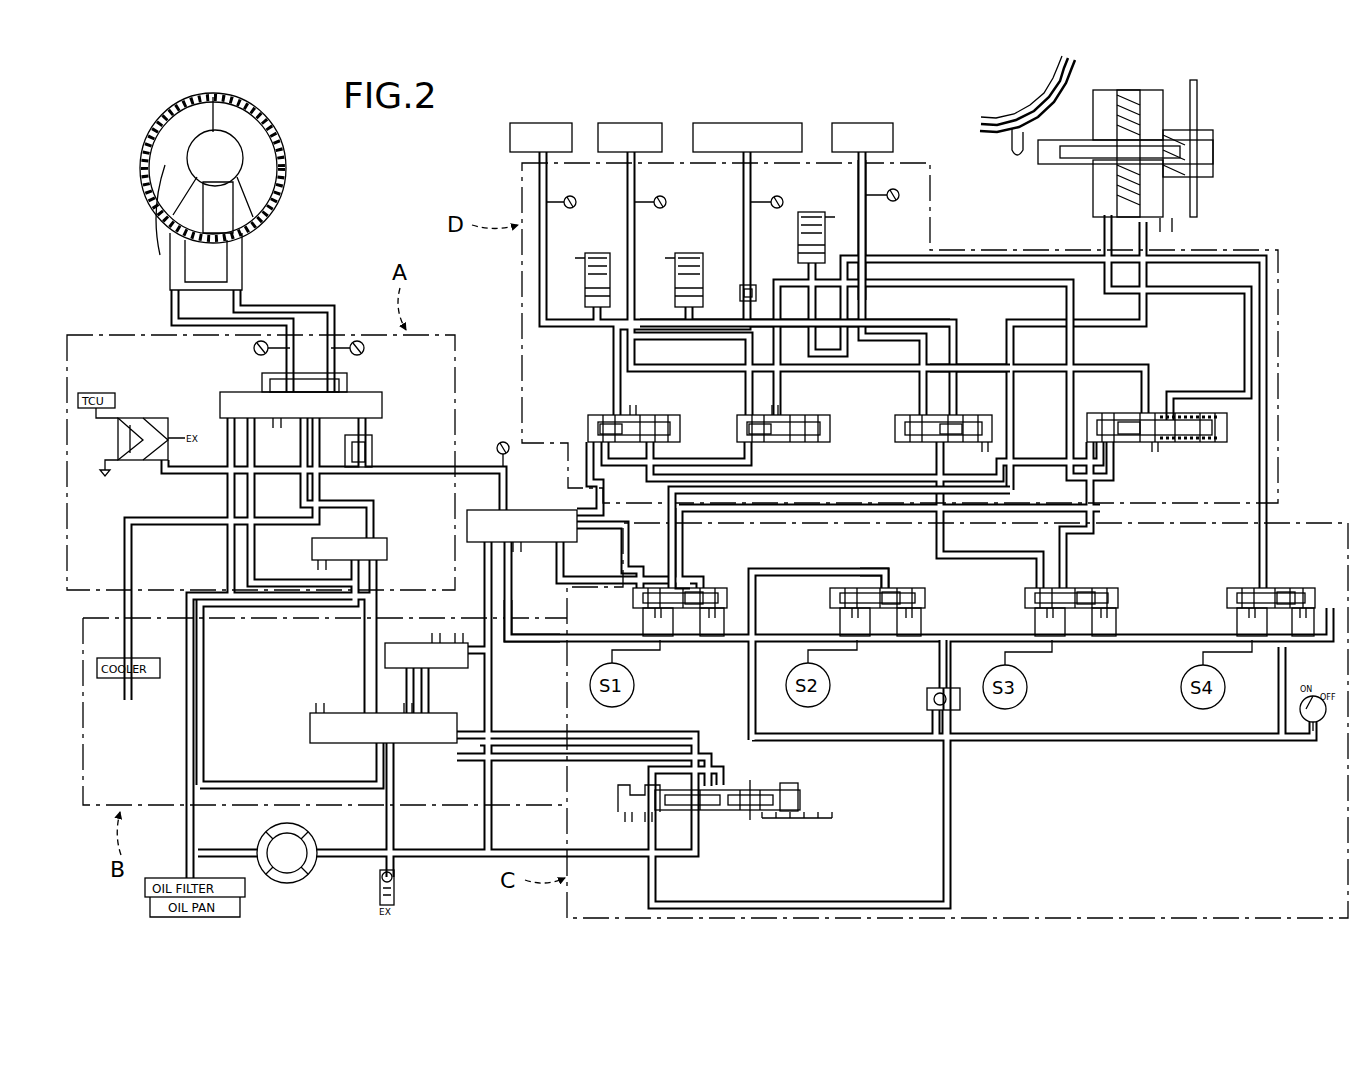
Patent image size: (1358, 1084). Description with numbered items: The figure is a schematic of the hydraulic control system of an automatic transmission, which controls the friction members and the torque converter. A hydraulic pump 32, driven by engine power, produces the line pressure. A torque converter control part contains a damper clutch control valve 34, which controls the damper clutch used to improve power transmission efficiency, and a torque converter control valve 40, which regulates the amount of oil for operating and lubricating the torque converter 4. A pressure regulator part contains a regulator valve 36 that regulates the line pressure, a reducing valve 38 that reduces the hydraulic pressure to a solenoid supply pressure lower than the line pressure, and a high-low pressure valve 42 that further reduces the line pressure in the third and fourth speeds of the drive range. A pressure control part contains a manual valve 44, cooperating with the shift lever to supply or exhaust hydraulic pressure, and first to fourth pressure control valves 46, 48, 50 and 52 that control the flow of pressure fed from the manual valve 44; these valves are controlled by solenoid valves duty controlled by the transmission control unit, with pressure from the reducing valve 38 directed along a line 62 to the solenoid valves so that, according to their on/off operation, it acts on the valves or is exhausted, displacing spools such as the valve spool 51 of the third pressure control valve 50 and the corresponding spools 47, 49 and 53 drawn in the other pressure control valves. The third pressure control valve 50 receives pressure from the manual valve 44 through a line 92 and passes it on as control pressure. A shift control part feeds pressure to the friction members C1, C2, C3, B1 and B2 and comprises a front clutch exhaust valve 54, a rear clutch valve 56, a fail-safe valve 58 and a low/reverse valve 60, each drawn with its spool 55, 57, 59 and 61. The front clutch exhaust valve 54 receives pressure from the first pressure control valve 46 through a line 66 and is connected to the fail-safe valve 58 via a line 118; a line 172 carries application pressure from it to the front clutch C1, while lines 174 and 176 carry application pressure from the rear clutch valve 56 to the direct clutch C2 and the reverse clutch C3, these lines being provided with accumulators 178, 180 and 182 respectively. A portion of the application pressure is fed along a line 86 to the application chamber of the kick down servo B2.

The torque converter 4 is at (302, 166).
The hydraulic pump 32 is at (287, 883).
The damper clutch control valve 34 is at (390, 405).
The regulator valve 36 is at (305, 728).
The reducing valve 38 is at (545, 508).
The torque converter control valve 40 is at (395, 549).
The high-low pressure valve 42 is at (383, 655).
The manual valve 44 is at (812, 798).
The first pressure control valve 46 is at (630, 598).
The spool of first shift valve 47 is at (696, 592).
The second pressure control valve 48 is at (827, 598).
The spool of second shift valve 49 is at (893, 592).
The third pressure control valve 50 is at (1022, 598).
The valve spool 51 is at (1086, 594).
The fourth pressure control valve 52 is at (1224, 598).
The spool of fourth shift valve 53 is at (1284, 594).
The front clutch exhaust valve 54 is at (1192, 448).
The spool of B2 control valve 55 is at (1132, 446).
The rear clutch valve 56 is at (912, 418).
The spool of C2 control valve 57 is at (955, 424).
The fail-safe valve 58 is at (732, 415).
The spool of C1 control valve 59 is at (782, 424).
The low/reverse valve 60 is at (585, 428).
The spool of C3 control valve 61 is at (632, 424).
The line 62 is at (513, 644).
The line 66 is at (678, 538).
The line 86 is at (866, 557).
The line 92 is at (938, 665).
The line 118 is at (1066, 305).
The line 172 is at (976, 363).
The line 174 is at (869, 233).
The line 176 is at (908, 318).
The accumulator 178 is at (688, 253).
The accumulator 180 is at (812, 212).
The accumulator 182 is at (597, 253).
The kick down servo B2 is at (1078, 183).
The front clutch C1 is at (630, 123).
The direct clutch C2 is at (863, 123).
The reverse clutch C3 is at (542, 123).
The friction member B1 is at (748, 123).